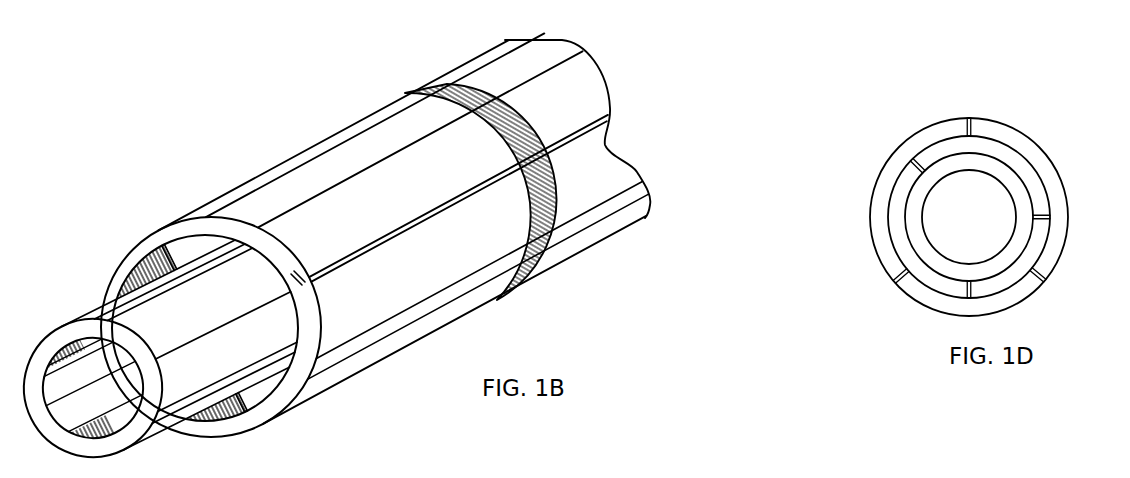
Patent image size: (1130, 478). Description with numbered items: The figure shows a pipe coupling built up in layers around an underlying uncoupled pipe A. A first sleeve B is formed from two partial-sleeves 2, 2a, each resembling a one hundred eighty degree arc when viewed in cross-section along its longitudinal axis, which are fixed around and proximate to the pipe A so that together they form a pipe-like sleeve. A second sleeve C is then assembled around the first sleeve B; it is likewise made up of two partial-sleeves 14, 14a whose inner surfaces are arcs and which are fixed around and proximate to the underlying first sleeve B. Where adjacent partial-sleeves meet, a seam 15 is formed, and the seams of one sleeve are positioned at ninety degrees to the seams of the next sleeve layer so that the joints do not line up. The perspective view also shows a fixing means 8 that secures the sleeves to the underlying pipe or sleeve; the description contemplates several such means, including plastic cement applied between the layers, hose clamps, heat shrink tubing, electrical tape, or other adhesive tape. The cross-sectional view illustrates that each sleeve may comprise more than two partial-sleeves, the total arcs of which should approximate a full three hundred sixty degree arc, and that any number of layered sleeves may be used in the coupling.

In FIG. 1B, the partial-sleeve 2 is at (227, 242).
In FIG. 1B, the partial-sleeve 2a is at (217, 408).
In FIG. 1B, the band 8 is at (533, 255).
In FIG. 1B, the partial-sleeve 14 is at (293, 385).
In FIG. 1B, the partial-sleeve 14a is at (205, 228).
In FIG. 1D, the seam 15 is at (975, 120).
In FIG. 1B, the uncoupled pipe A is at (141, 318).
In FIG. 1D, the uncoupled pipe A is at (1003, 270).
In FIG. 1B, the first sleeve B is at (155, 256).
In FIG. 1D, the first sleeve B is at (1052, 230).
In FIG. 1B, the second sleeve C is at (384, 320).
In FIG. 1D, the second sleeve C is at (1053, 172).